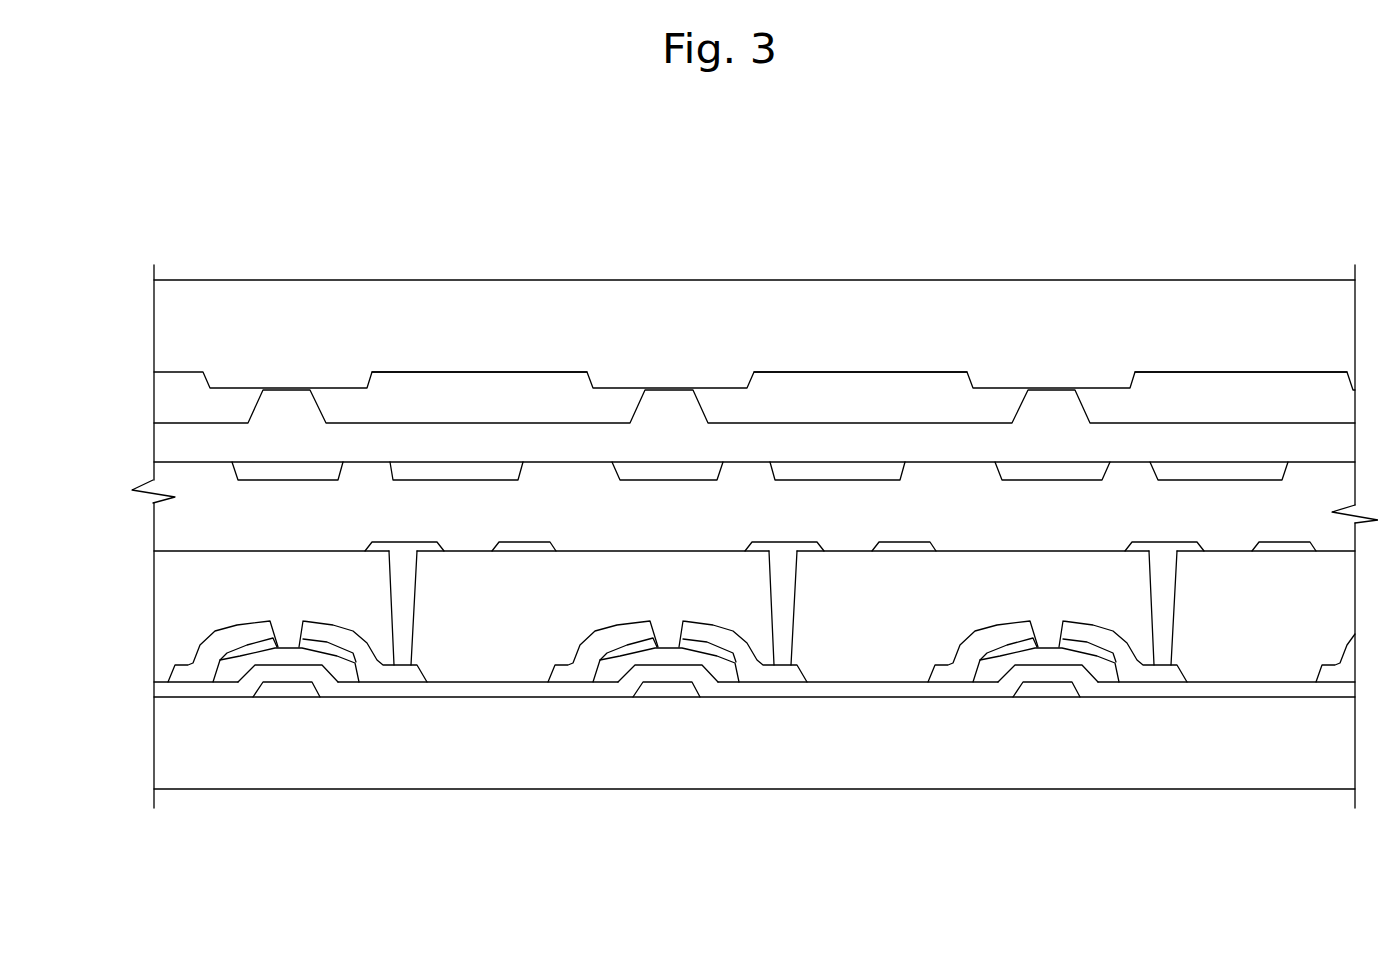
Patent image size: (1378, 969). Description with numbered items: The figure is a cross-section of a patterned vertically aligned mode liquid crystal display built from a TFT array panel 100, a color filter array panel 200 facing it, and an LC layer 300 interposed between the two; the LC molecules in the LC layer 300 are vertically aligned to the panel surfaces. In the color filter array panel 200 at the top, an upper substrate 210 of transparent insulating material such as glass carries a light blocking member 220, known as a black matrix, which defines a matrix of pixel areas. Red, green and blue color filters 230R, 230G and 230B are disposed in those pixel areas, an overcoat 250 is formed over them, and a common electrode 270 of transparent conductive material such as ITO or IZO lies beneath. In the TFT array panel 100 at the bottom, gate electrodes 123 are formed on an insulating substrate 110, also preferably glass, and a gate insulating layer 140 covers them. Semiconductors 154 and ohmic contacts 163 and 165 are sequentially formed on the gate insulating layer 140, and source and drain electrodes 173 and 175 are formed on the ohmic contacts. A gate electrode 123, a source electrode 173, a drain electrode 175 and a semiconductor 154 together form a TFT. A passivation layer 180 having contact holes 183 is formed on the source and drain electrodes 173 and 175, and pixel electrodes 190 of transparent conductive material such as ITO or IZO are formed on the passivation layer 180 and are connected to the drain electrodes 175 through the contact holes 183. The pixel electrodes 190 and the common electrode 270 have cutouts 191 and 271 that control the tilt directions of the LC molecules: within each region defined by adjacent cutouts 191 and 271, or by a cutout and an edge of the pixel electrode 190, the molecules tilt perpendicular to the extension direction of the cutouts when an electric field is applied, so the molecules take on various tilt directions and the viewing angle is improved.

The TFT array panel 100 is at (711, 655).
The insulating substrate 110 is at (754, 778).
The gate electrode 123 is at (666, 768).
The gate insulating layer 140 is at (754, 759).
The semiconductor 154 is at (666, 749).
The ohmic contact 163 is at (628, 746).
The ohmic contact 165 is at (720, 743).
The source electrode 173 is at (761, 735).
The drain electrode 175 is at (754, 738).
The passivation layer 180 is at (754, 705).
The contact hole 183 is at (783, 441).
The pixel electrode 190 is at (914, 702).
The cutout 191 is at (825, 373).
The color filter array panel 200 is at (711, 385).
The upper substrate 210 is at (754, 265).
The light blocking member 220 is at (754, 298).
The red color filter 230R is at (479, 297).
The green color filter 230G is at (860, 295).
The blue color filter 230B is at (1248, 297).
The overcoat 250 is at (754, 322).
The common electrode 270 is at (754, 324).
The cutout 271 is at (760, 665).
The LC layer 300 is at (720, 510).
The thin film transistor TFT is at (1033, 823).